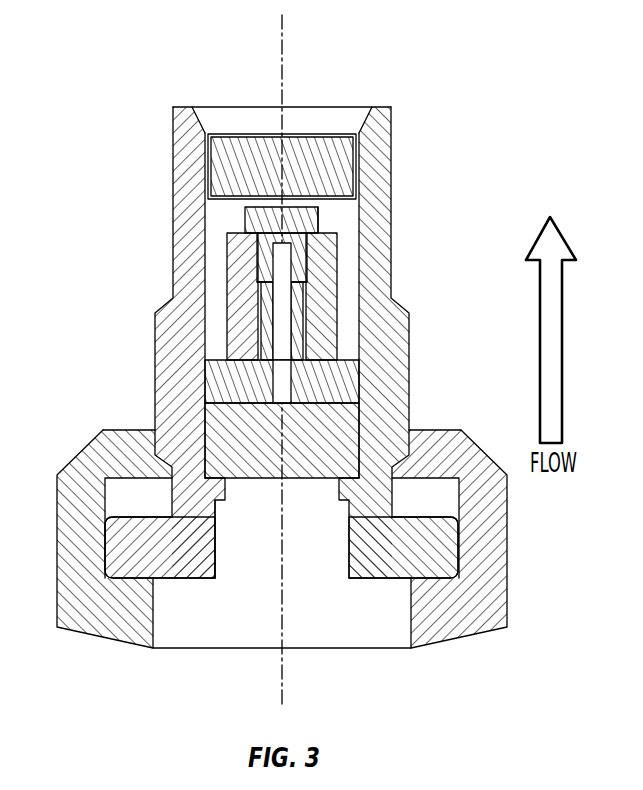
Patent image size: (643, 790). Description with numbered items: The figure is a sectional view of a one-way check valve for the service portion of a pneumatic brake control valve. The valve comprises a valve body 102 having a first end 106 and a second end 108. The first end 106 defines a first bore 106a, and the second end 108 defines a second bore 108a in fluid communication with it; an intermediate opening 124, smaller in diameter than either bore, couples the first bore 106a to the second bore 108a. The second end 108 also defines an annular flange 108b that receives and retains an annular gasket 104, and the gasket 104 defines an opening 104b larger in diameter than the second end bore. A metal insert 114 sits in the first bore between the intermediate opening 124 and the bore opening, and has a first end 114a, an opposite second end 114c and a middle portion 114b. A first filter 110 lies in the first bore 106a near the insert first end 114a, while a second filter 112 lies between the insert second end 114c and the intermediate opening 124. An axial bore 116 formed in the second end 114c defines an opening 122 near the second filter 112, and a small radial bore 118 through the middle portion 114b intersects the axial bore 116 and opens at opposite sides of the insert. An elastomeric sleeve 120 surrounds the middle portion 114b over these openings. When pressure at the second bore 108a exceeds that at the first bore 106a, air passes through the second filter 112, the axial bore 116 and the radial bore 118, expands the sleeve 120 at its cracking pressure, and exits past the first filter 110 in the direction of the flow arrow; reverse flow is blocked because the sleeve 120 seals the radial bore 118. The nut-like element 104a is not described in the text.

The valve body 102 is at (409, 358).
The annular gasket 104 is at (458, 618).
The nut upper flange 104a is at (105, 432).
The gasket opening 104b is at (410, 610).
The first end 106 is at (391, 123).
The first bore 106a is at (237, 94).
The second end 108 is at (455, 528).
The second bore 108a is at (229, 571).
The annular flange 108b is at (118, 548).
The first filter 110 is at (329, 146).
The second filter 112 is at (317, 445).
The metal insert 114 is at (245, 218).
The metal insert first end 114a is at (318, 218).
The metal insert middle portion 114b is at (297, 312).
The metal insert second end 114c is at (240, 380).
The axial bore 116 is at (278, 262).
The radial bore 118 is at (267, 290).
The sleeve 120 is at (336, 248).
The opening of axial bore 122 is at (287, 384).
The intermediate opening 124 is at (226, 482).